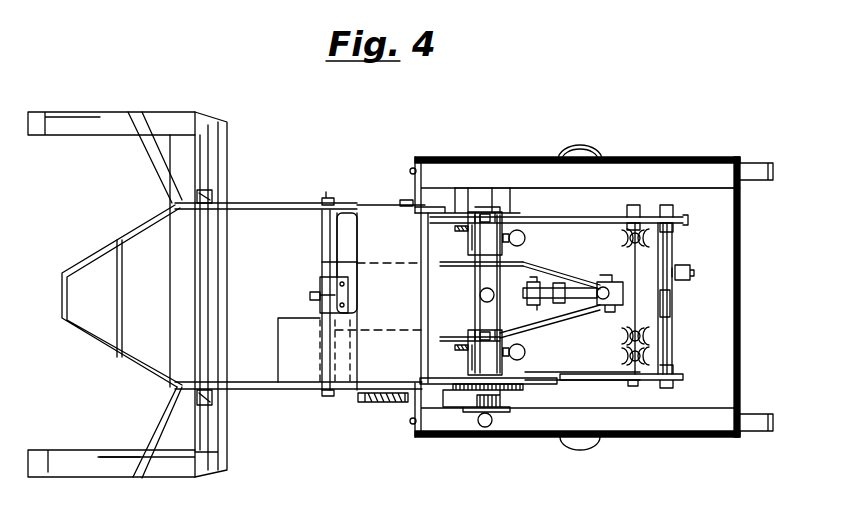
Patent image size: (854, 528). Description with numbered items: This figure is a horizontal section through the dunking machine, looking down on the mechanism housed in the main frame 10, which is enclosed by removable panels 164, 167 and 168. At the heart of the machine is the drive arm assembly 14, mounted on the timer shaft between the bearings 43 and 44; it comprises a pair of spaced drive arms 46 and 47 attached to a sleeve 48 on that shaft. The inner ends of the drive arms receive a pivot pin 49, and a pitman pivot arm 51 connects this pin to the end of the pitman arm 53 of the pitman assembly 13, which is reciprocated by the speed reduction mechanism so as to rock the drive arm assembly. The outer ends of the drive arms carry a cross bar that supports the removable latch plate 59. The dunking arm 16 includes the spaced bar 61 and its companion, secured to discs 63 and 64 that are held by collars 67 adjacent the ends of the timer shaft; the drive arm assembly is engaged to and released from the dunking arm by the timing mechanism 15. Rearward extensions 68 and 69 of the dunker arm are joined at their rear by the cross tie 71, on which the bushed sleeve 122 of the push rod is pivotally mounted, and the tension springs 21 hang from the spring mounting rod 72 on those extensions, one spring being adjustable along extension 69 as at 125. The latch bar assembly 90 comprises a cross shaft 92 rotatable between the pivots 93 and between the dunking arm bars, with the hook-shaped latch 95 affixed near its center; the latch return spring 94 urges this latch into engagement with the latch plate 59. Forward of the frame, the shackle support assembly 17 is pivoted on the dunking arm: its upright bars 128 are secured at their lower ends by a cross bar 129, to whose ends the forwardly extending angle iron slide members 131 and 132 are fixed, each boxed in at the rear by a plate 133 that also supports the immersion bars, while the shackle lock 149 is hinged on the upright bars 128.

The main frame 10 is at (633, 434).
The pitman assembly 13 is at (523, 293).
The drive arm assembly 14 is at (614, 273).
The timing mechanism 15 is at (522, 430).
The dunking arm 16 is at (281, 187).
The shackle support assembly 17 is at (172, 472).
The springs 21 is at (635, 354).
The bearing 43 is at (508, 360).
The bearing 44 is at (498, 233).
The drive arm 46 is at (522, 263).
The drive arm 47 is at (535, 325).
The sleeve 48 is at (480, 286).
The pivot pin 49 is at (612, 273).
The pitman pivot arm 51 is at (568, 282).
The pitman arm 53 is at (530, 302).
The latch plate 59 is at (320, 286).
The bar 61 is at (268, 388).
The disc 63 is at (440, 383).
The disc 64 is at (505, 206).
The collar 67 is at (462, 215).
The rearward extension 68 is at (676, 378).
The rearward extension 69 is at (570, 216).
The cross tie 71 is at (670, 322).
The spring mounting rod 72 is at (636, 274).
The latch bar assembly 90 is at (320, 241).
The cross shaft 92 is at (322, 265).
The pivots 93 is at (328, 197).
The latch return spring 94 is at (380, 402).
The hook-shaped latch 95 is at (311, 300).
The bushed sleeve 122 is at (665, 232).
The spring adjustment 125 is at (607, 211).
The upright bars 128 is at (213, 197).
The cross bar 129 is at (172, 303).
The slide member 131 is at (62, 455).
The slide member 132 is at (82, 135).
The plate 133 is at (122, 458).
The shackle lock 149 is at (92, 255).
The panel 164 is at (740, 385).
The panel 167 is at (680, 438).
The panel 168 is at (700, 130).